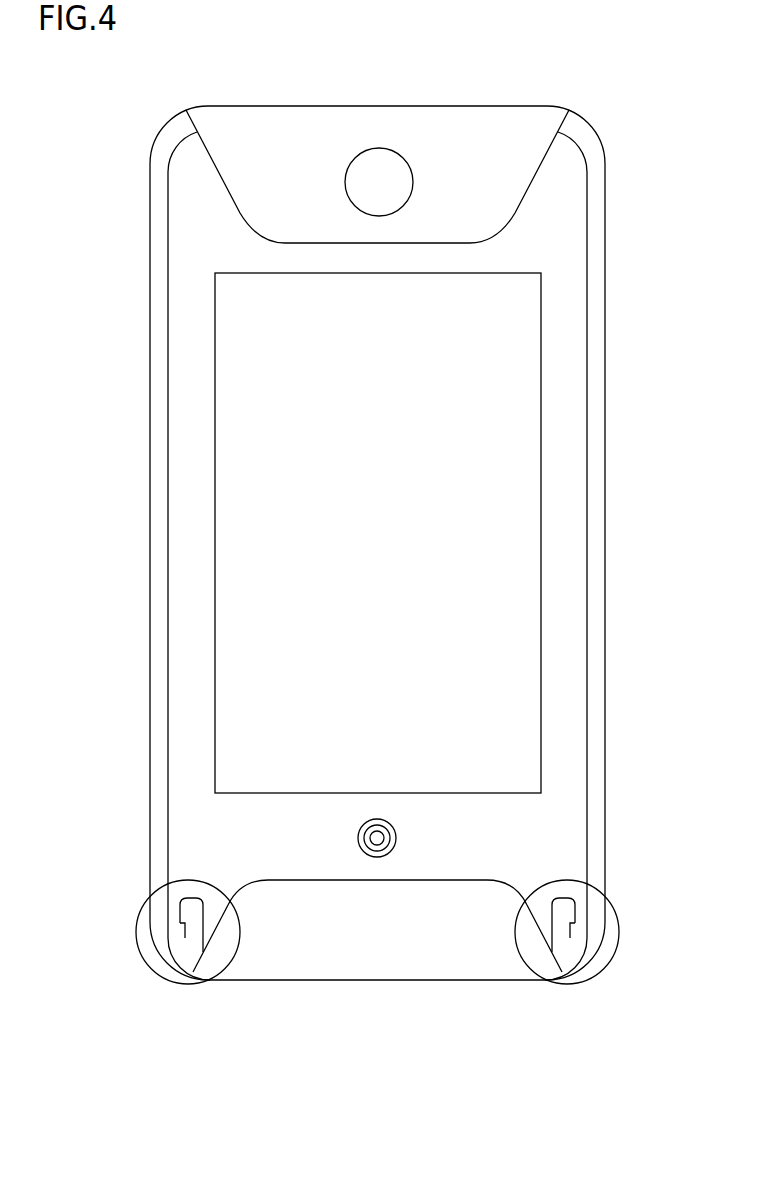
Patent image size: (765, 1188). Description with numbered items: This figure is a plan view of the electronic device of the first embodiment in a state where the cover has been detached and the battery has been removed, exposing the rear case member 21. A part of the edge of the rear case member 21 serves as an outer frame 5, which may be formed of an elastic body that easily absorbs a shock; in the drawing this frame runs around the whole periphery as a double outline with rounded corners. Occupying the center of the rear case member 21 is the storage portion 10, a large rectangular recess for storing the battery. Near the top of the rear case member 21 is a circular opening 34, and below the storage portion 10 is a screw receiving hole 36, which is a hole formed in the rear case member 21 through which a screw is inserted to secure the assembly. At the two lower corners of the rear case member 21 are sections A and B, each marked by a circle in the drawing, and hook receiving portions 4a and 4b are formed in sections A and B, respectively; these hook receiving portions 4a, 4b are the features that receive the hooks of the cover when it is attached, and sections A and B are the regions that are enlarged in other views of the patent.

The outer frame 5 is at (160, 592).
The storage portion 10 is at (490, 496).
The speaker 34 is at (376, 147).
The screw receiving hole 36 is at (396, 840).
The rear case member 21 is at (370, 935).
The hook receiving portion 4a is at (197, 933).
The hook receiving portion 4b is at (558, 935).
The section A is at (137, 920).
The section B is at (618, 920).